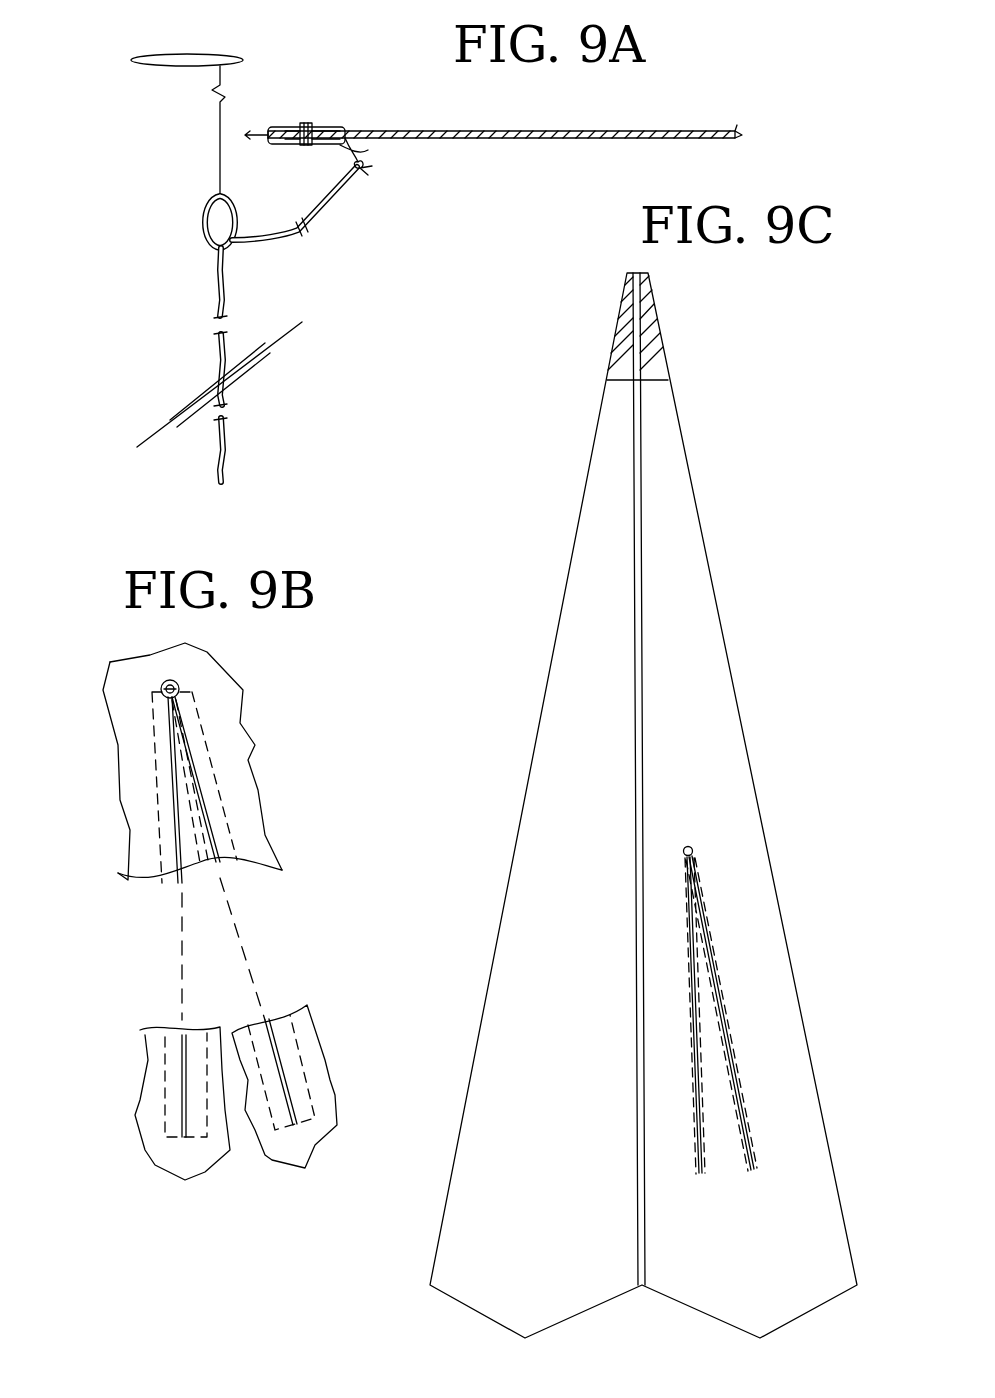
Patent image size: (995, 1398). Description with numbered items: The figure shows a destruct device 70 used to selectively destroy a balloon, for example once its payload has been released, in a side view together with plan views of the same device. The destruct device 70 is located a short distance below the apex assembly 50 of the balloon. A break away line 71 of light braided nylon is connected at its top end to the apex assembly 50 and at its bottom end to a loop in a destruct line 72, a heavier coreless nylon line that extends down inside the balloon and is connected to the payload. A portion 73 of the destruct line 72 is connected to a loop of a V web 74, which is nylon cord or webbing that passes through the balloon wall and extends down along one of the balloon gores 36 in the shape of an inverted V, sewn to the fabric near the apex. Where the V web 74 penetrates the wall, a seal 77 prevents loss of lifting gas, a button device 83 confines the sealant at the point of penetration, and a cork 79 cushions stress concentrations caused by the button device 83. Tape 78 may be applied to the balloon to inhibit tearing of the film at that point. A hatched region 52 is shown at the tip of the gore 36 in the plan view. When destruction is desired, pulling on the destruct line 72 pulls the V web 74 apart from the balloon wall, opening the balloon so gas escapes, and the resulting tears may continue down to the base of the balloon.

In FIG. 9B, the balloon gore 36 is at (313, 1132).
In FIG. 9C, the balloon gore 36 is at (687, 595).
In FIG. 9A, the apex assembly 50 is at (182, 55).
In FIG. 9C, the reinforced tip section 52 is at (615, 347).
In FIG. 9A, the destruct device 70 is at (185, 177).
In FIG. 9A, the break away line 71 is at (218, 122).
In FIG. 9A, the destruct line 72 is at (217, 293).
In FIG. 9A, the portion of the destruct line 73 is at (330, 205).
In FIG. 9A, the V web 74 is at (478, 138).
In FIG. 9B, the V web 74 is at (175, 1073).
In FIG. 9C, the V web 74 is at (712, 970).
In FIG. 9A, the seal 77 is at (347, 130).
In FIG. 9A, the tape 78 is at (190, 400).
In FIG. 9A, the cork 79 is at (318, 123).
In FIG. 9A, the button device 83 is at (278, 125).
In FIG. 9B, the button device 83 is at (178, 684).